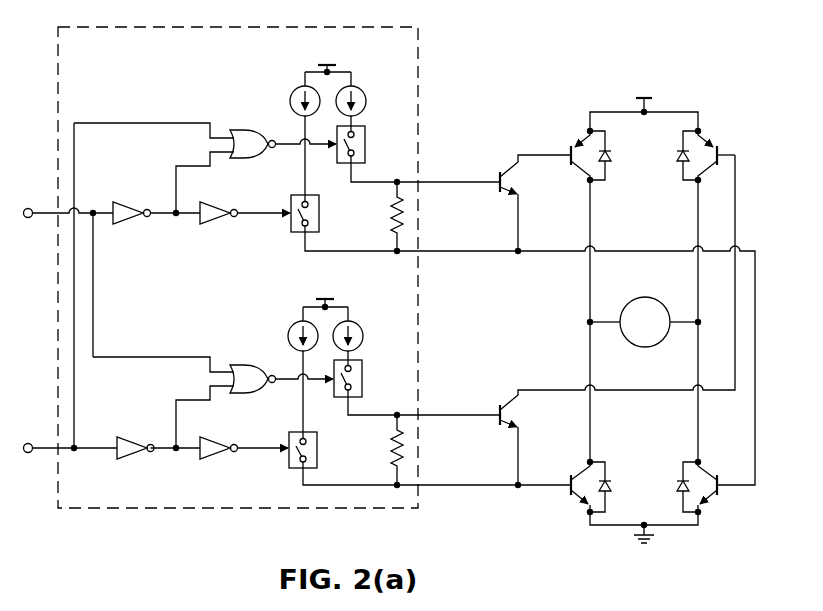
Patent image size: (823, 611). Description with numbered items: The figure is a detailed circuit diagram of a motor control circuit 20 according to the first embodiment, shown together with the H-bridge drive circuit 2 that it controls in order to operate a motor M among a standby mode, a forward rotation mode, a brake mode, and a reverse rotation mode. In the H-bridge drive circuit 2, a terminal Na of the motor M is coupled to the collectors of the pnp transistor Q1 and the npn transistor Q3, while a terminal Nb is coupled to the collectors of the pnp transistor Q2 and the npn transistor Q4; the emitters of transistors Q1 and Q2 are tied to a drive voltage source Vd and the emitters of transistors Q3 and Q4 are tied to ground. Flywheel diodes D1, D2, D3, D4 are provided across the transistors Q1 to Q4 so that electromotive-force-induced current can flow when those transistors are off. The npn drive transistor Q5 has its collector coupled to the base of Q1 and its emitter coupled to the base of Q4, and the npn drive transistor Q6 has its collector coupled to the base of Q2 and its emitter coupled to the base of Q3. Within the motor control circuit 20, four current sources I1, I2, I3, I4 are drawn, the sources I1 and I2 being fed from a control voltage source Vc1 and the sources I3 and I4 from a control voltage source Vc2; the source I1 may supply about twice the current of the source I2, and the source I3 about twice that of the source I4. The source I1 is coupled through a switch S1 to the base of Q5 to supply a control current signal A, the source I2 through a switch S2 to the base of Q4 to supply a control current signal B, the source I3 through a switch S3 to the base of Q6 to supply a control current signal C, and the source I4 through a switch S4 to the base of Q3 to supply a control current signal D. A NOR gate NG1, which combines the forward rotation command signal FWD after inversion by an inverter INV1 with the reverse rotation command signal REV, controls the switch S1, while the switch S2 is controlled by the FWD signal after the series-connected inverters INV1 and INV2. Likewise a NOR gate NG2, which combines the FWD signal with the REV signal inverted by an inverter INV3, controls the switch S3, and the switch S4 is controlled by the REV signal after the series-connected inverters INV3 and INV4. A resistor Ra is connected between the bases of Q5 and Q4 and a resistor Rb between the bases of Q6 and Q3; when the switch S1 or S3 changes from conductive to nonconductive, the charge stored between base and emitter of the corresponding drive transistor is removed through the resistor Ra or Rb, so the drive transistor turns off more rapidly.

The H-bridge drive circuit 2 is at (740, 76).
The motor control circuit 20 is at (420, 67).
The forward rotation command signal FWD is at (59, 202).
The reverse rotation command signal REV is at (63, 437).
The inverter INV1 is at (130, 220).
The inverter INV2 is at (218, 220).
The inverter INV3 is at (133, 455).
The inverter INV4 is at (218, 455).
The NOR gate NG1 is at (246, 127).
The NOR gate NG2 is at (246, 362).
The control voltage source Vc1 is at (328, 59).
The control voltage source Vc2 is at (325, 293).
The current source I1 is at (366, 96).
The current source I2 is at (292, 95).
The current source I3 is at (363, 331).
The current source I4 is at (290, 330).
The switch S1 is at (366, 140).
The switch S2 is at (320, 217).
The switch S3 is at (363, 373).
The switch S4 is at (318, 447).
The resistor Ra is at (391, 216).
The resistor Rb is at (389, 450).
The control current signal A is at (443, 179).
The control current signal B is at (443, 248).
The control current signal C is at (447, 412).
The control current signal D is at (447, 482).
The pnp transistor Q1 is at (569, 146).
The pnp transistor Q2 is at (724, 146).
The npn transistor Q3 is at (568, 497).
The npn transistor Q4 is at (725, 497).
The npn drive transistor Q5 is at (498, 171).
The npn drive transistor Q6 is at (498, 404).
The flywheel diode D1 is at (617, 158).
The flywheel diode D2 is at (678, 157).
The flywheel diode D3 is at (617, 490).
The flywheel diode D4 is at (678, 490).
The drive voltage source Vd is at (644, 102).
The motor terminal Na is at (586, 319).
The motor terminal Nb is at (702, 318).
The motor M is at (645, 322).